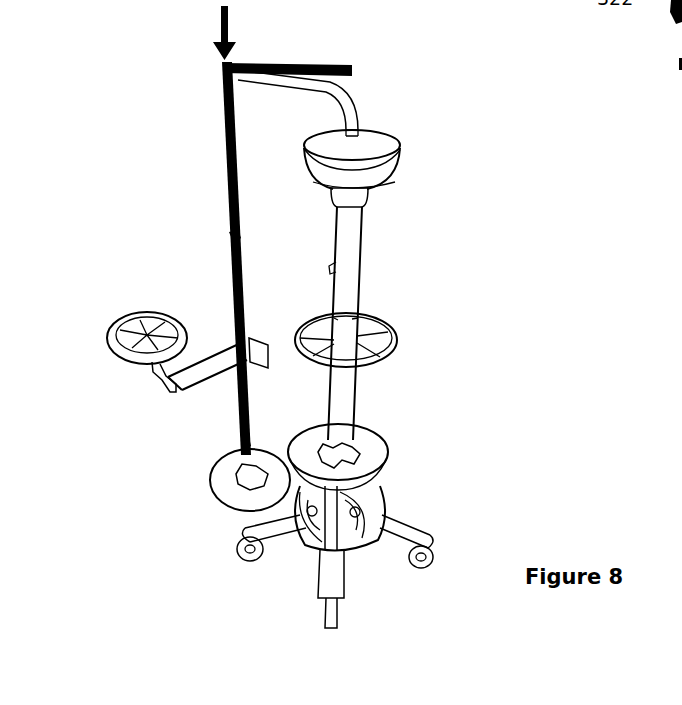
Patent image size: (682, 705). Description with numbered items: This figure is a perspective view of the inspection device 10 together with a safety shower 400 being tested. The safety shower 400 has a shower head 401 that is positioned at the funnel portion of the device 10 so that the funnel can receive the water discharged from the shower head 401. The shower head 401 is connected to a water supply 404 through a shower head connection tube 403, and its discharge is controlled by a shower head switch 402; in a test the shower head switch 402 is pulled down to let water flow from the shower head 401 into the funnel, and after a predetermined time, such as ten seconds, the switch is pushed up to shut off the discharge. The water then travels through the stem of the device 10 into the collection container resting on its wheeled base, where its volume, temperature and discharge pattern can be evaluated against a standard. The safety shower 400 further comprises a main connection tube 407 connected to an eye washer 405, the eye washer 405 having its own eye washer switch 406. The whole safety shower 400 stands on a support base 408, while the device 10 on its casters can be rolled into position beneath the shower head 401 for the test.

The device 10 is at (398, 270).
The safety shower 400 is at (172, 258).
The shower head 401 is at (365, 128).
The shower head switch 402 is at (328, 70).
The shower head connection tube 403 is at (250, 68).
The water supply 404 is at (218, 28).
The eye washer 405 is at (110, 363).
The eye washer switch 406 is at (180, 394).
The main connection tube 407 is at (239, 293).
The support base 408 is at (210, 481).